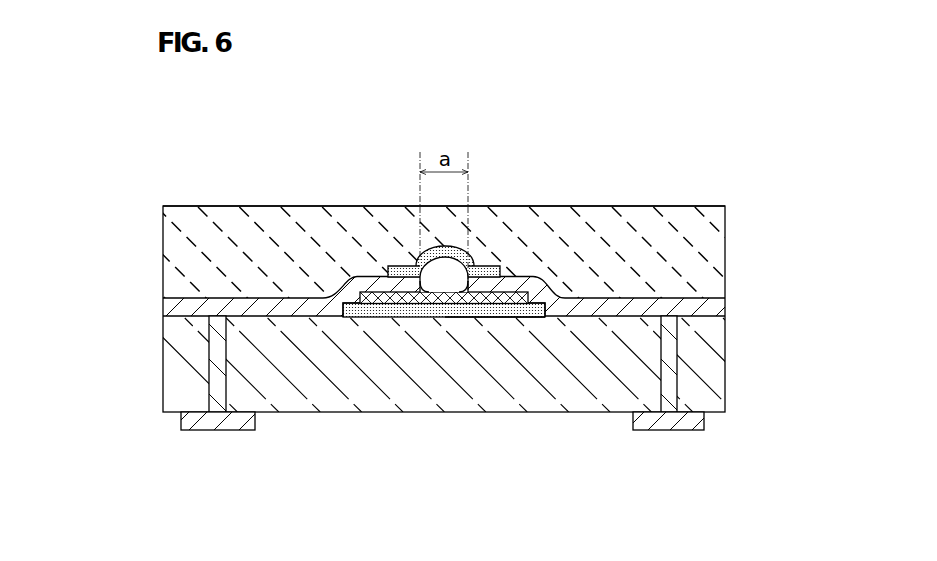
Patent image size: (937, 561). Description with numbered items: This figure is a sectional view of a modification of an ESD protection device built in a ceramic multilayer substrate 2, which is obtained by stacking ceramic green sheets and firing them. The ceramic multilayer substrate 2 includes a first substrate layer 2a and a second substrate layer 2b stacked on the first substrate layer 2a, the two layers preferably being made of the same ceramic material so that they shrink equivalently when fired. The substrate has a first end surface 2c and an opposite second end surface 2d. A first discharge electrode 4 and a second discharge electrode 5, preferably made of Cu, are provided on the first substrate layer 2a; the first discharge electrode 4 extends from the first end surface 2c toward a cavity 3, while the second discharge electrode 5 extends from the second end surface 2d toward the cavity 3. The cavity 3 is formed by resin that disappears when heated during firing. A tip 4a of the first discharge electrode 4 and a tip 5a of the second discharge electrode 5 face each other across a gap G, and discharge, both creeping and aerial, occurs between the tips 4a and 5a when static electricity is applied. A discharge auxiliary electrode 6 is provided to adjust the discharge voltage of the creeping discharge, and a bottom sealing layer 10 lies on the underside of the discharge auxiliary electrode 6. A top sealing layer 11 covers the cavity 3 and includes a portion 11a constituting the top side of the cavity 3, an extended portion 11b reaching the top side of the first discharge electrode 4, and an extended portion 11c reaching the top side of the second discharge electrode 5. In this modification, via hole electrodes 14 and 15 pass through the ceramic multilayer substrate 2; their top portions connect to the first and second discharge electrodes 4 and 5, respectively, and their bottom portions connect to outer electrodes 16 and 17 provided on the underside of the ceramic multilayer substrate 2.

The ceramic multilayer substrate 2 is at (65, 275).
The first substrate layer 2a is at (162, 368).
The second substrate layer 2b is at (162, 260).
The first end surface 2c is at (162, 390).
The second end surface 2d is at (727, 250).
The cavity 3 is at (449, 255).
The first discharge electrode 4 is at (312, 318).
The tip of the first discharge electrode 4a is at (429, 312).
The second discharge electrode 5 is at (600, 318).
The tip of the second discharge electrode 5a is at (467, 308).
The discharge auxiliary electrode 6 is at (372, 292).
The bottom sealing layer 10 is at (370, 305).
The top sealing layer 11 is at (492, 268).
The portion constituting the top side of the cavity 11a is at (437, 247).
The extended portion 11b is at (400, 266).
The extended portion 11c is at (477, 257).
The via hole electrode 14 is at (210, 366).
The via hole electrode 15 is at (677, 383).
The outer electrode 16 is at (205, 430).
The outer electrode 17 is at (678, 430).
The gap G is at (419, 263).